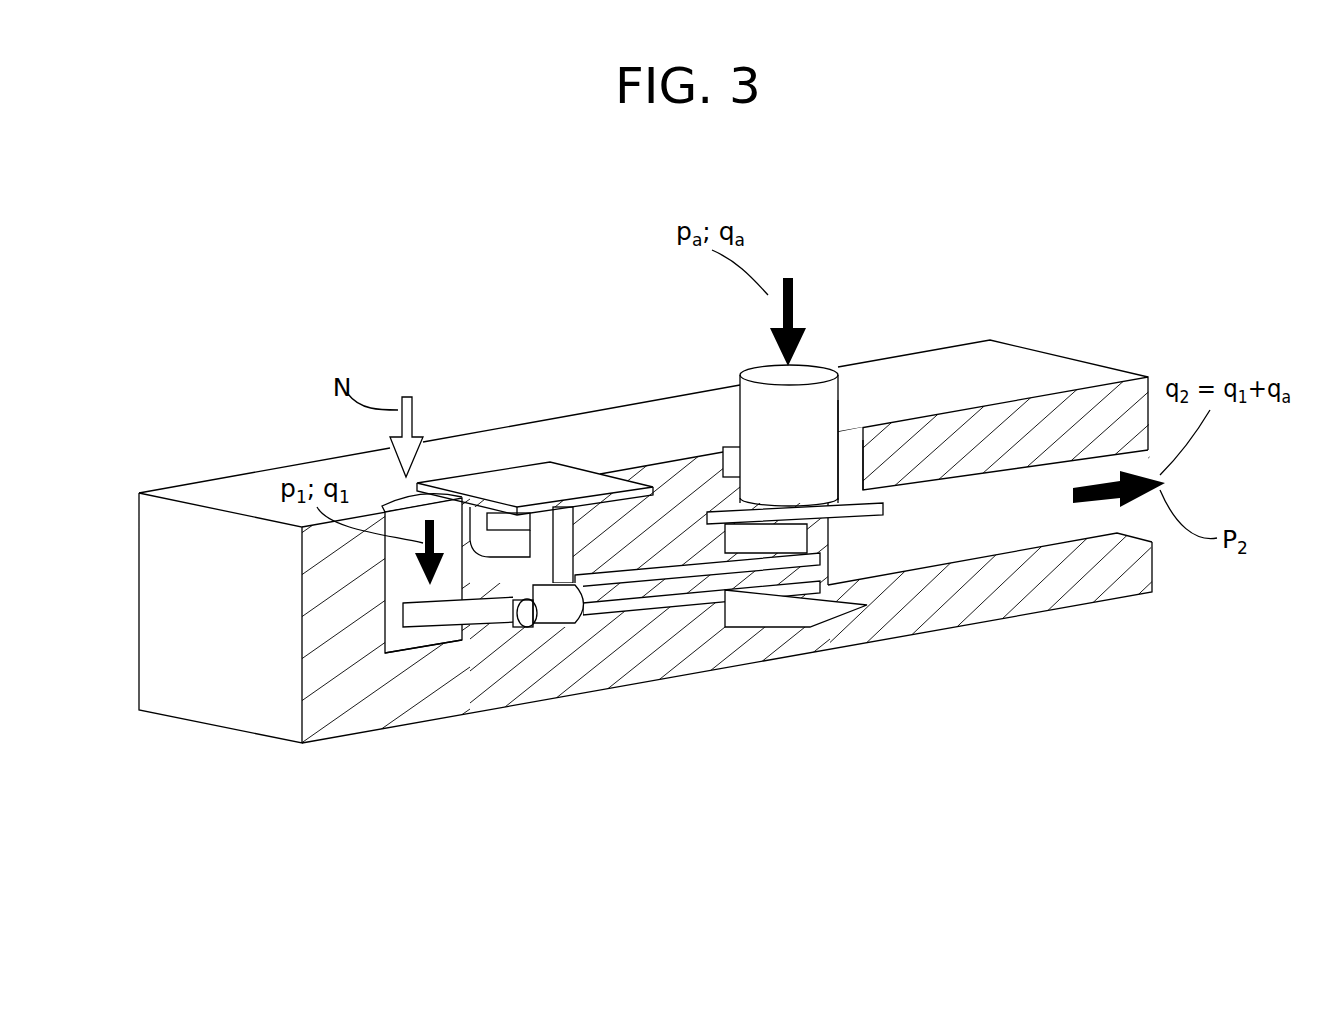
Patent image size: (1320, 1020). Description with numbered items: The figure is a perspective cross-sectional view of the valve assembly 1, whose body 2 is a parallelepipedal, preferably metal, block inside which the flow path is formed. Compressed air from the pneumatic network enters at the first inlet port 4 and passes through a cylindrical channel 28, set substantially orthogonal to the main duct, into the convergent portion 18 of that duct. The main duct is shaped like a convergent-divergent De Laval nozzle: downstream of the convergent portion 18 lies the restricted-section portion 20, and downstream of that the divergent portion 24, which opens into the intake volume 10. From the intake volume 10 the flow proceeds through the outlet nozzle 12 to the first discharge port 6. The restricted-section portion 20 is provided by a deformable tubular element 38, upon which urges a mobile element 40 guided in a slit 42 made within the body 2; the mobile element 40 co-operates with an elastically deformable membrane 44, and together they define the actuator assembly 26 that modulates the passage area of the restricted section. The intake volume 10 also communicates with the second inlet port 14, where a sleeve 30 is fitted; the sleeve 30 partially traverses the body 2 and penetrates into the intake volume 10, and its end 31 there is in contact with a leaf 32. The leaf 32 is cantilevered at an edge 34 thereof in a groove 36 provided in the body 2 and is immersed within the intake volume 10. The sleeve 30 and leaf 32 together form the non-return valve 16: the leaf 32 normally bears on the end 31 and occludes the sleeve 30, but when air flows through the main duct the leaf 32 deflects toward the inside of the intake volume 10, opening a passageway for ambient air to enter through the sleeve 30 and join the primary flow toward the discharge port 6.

The valve assembly 1 is at (310, 253).
The body 2 is at (1052, 352).
The first inlet port 4 is at (383, 492).
The first discharge port 6 is at (1125, 520).
The intake volume 10 is at (767, 607).
The outlet nozzle 12 is at (1000, 540).
The second inlet port 14 is at (805, 365).
The non-return valve 16 is at (898, 435).
The convergent portion 18 is at (428, 652).
The restricted-section portion 20 is at (597, 615).
The divergent portion 24 is at (637, 612).
The actuator assembly 26 is at (540, 462).
The cylindrical channel 28 is at (385, 570).
The sleeve 30 is at (848, 410).
The end 31 is at (835, 505).
The leaf 32 is at (847, 500).
The edge 34 is at (655, 605).
The groove 36 is at (717, 483).
The deformable tubular element 38 is at (560, 612).
The mobile element 40 is at (600, 490).
The slit 42 is at (473, 497).
The elastically deformable membrane 44 is at (498, 483).